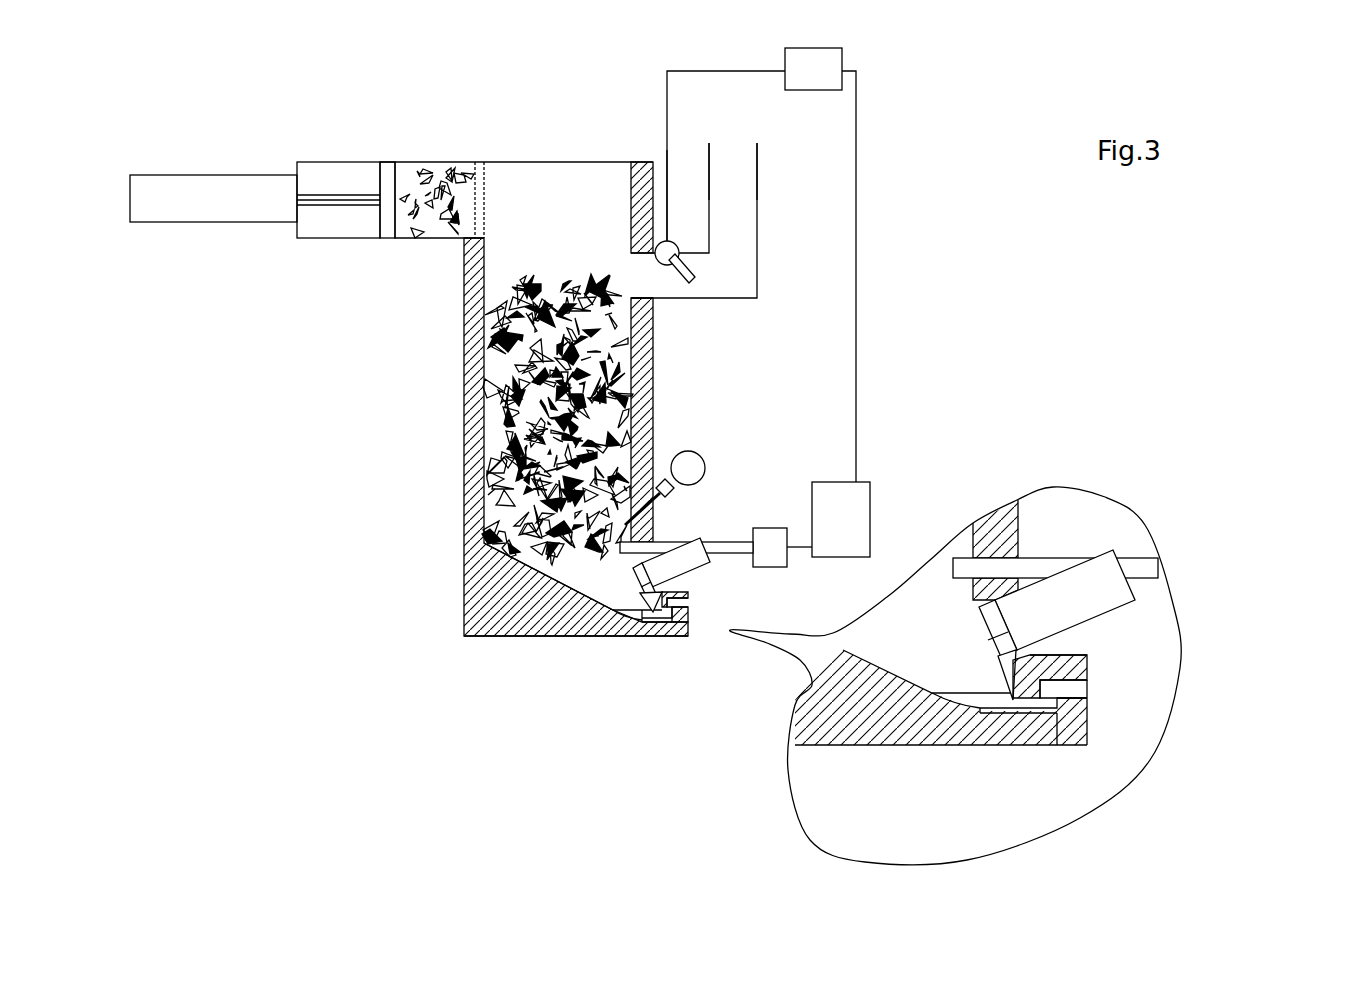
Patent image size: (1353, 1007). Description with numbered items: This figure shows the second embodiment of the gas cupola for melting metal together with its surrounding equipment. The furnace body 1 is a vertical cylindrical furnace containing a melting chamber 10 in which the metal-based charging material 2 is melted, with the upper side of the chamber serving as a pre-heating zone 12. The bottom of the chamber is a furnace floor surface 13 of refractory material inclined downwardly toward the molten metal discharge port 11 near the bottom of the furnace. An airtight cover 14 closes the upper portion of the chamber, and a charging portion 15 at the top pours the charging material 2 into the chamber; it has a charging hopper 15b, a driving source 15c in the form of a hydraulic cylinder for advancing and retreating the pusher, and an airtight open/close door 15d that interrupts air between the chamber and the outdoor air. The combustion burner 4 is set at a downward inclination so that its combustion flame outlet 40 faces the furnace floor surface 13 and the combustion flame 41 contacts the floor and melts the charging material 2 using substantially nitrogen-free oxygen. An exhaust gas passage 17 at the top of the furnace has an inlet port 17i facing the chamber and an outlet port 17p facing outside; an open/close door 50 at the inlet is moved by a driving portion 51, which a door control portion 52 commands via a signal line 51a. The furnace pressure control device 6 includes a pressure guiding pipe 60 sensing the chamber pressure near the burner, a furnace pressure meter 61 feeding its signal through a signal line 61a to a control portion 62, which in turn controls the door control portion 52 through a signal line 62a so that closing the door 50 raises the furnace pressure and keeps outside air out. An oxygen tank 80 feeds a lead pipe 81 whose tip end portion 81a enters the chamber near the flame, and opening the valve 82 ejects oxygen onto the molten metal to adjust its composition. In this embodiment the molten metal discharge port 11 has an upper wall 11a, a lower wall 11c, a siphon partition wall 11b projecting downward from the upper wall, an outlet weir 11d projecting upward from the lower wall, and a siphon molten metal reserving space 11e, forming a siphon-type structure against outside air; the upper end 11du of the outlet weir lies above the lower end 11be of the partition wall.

The furnace body 1 is at (460, 375).
The charging material 2 is at (492, 490).
The combustion burner 4 is at (690, 563).
The furnace pressure control device 6 is at (853, 530).
The melting chamber 10 is at (482, 530).
The molten metal discharge port 11 is at (682, 598).
The upper wall 11a is at (1092, 657).
The siphon partition wall 11b is at (655, 624).
The lower end of siphon partition wall 11be is at (1045, 750).
The lower wall 11c is at (1058, 735).
The outlet weir 11d is at (686, 605).
The upper end of outlet weir 11du is at (1098, 690).
The siphon molten metal reserving space 11e is at (650, 628).
The pre-heating zone 12 is at (492, 433).
The furnace floor surface 13 is at (482, 588).
The airtight cover 14 is at (515, 165).
The charging portion 15 is at (325, 172).
The charging hopper 15b is at (384, 240).
The driving source 15c is at (250, 205).
The airtight open/close door 15d is at (487, 210).
The exhaust gas passage 17 is at (740, 185).
The inlet port 17i is at (638, 287).
The outlet port 17p is at (745, 160).
The combustion flame outlet 40 is at (608, 618).
The combustion flame 41 is at (580, 640).
The open/close door 50 is at (680, 284).
The driving portion 51 is at (672, 240).
The signal line 51a is at (705, 72).
The door control portion 52 is at (815, 62).
The pressure guiding pipe 60 is at (769, 528).
The furnace pressure meter 61 is at (798, 545).
The signal line 61a is at (800, 552).
The control portion 62 is at (870, 500).
The signal line 62a is at (855, 383).
The oxygen tank 80 is at (700, 455).
The lead pipe 81 is at (640, 476).
The tip end portion 81a is at (625, 540).
The valve 82 is at (677, 493).